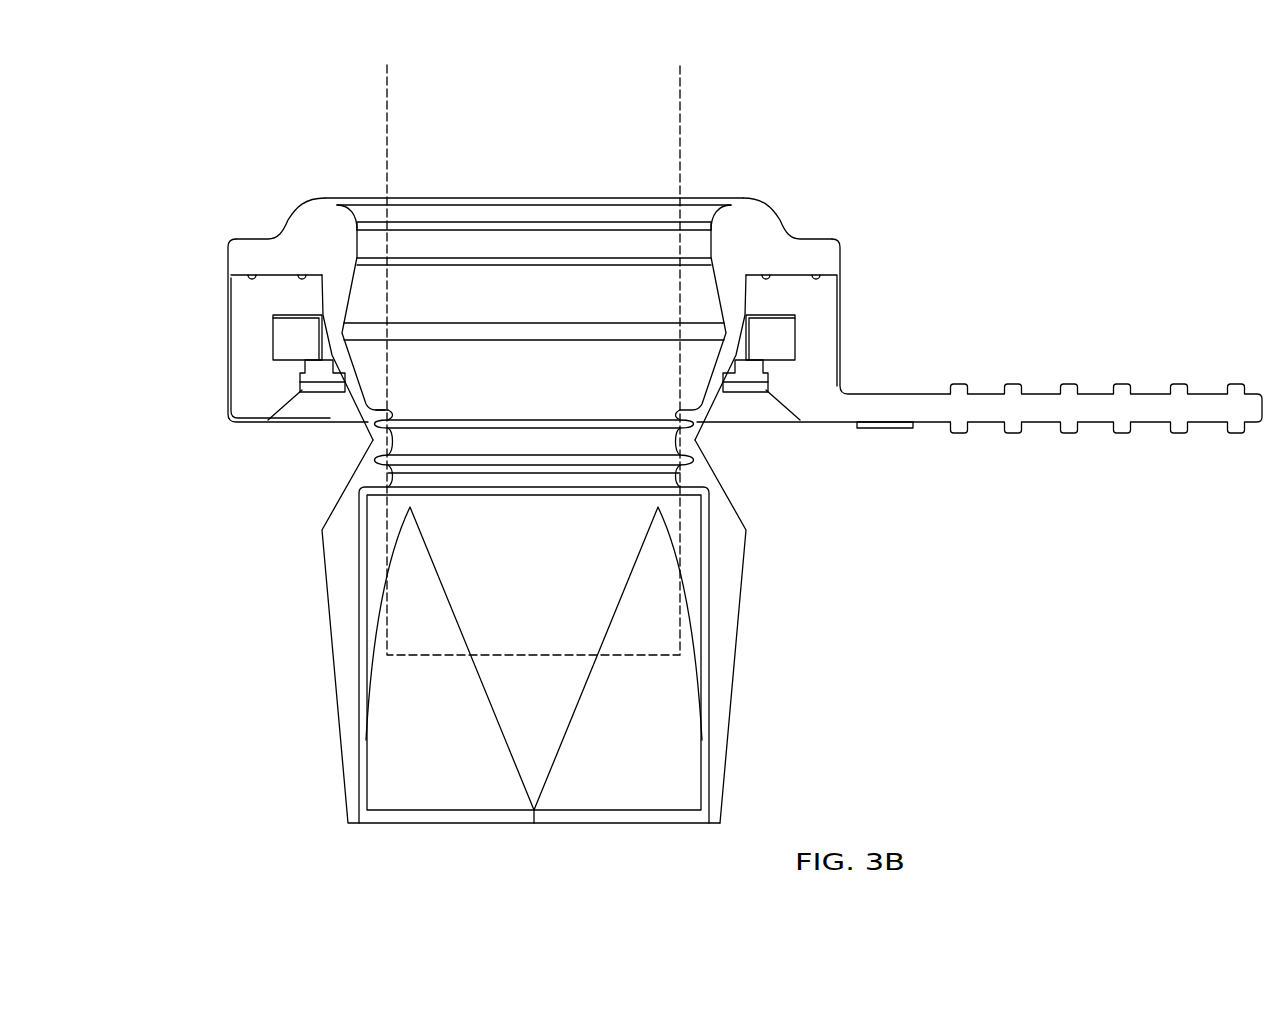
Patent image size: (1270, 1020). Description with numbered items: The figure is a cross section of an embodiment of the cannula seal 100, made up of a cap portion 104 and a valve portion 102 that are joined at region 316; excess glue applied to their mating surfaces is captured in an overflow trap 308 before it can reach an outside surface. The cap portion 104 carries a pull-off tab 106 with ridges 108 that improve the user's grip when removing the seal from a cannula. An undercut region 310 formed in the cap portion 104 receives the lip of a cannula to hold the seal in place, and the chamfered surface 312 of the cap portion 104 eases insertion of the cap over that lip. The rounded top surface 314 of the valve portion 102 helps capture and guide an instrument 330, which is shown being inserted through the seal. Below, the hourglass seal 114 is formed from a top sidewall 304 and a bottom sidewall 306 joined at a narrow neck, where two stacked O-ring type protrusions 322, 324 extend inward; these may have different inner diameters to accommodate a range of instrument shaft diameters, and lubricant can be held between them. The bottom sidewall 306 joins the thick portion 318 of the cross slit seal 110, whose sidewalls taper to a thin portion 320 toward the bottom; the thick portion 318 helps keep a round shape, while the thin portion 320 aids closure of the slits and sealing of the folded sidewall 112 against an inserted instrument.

The cannula seal 100 is at (212, 107).
The valve portion 102 is at (736, 684).
The cap portion 104 is at (790, 410).
The pull-off tab 106 is at (1206, 431).
The ridges 108 is at (1236, 384).
The cross slit seal 110 is at (352, 762).
The folded sidewall 112 is at (563, 615).
The hourglass seal 114 is at (365, 410).
The top sidewall 304 is at (770, 387).
The bottom sidewall 306 is at (717, 490).
The overflow trap 308 is at (825, 288).
The undercut region 310 is at (280, 338).
The surface 312 is at (292, 407).
The top surface 314 is at (651, 253).
The region 316 is at (268, 258).
The thick portion 318 is at (736, 535).
The thin portion 320 is at (705, 713).
The protrusion 322 is at (690, 442).
The protrusion 324 is at (683, 482).
The instrument 330 is at (683, 100).